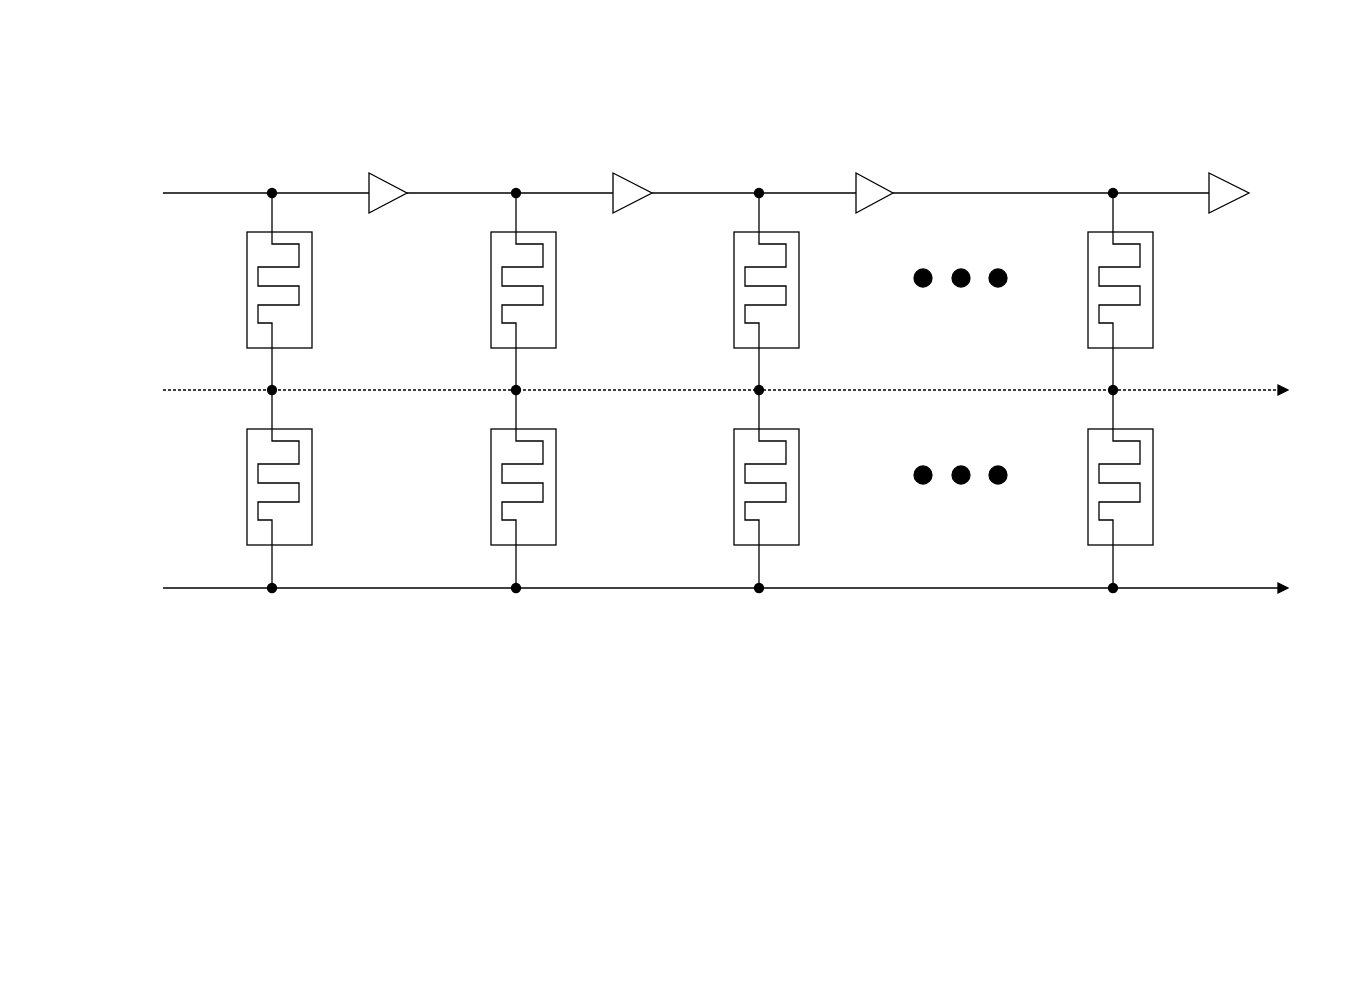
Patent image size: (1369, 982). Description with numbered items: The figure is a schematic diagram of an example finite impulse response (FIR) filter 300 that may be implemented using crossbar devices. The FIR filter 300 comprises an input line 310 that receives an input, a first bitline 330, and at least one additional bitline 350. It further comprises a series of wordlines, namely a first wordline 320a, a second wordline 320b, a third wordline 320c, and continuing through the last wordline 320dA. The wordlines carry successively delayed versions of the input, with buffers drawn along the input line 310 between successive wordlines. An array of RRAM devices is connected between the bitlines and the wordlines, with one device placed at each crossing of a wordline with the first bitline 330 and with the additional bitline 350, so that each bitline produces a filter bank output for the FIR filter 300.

The finite impulse response (FIR) filter 300 is at (145, 122).
The input line 310 is at (143, 216).
The wordline WL(1) 320a is at (249, 170).
The wordline WL(2) 320b is at (493, 170).
The wordline WL(3) 320c is at (736, 170).
The wordline WL(K) 320dA is at (1085, 170).
The first bitline BL(1) 330 is at (127, 411).
The additional bitline BL(j) 350 is at (127, 608).